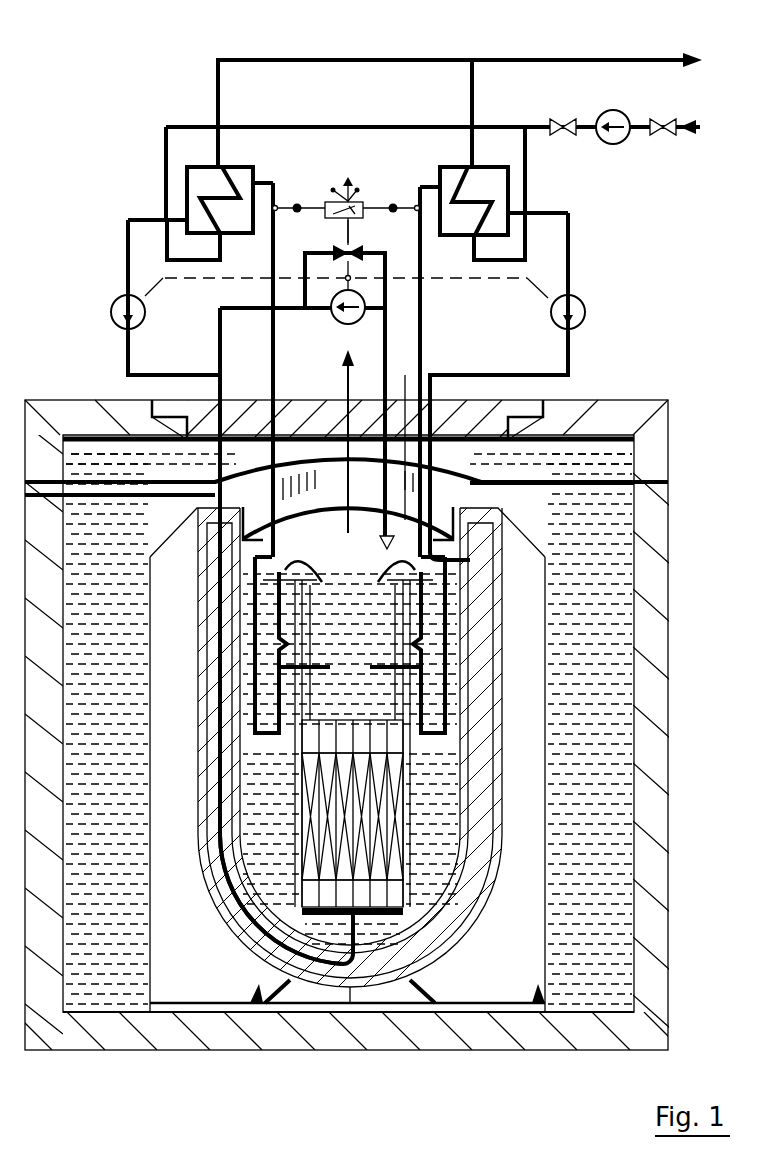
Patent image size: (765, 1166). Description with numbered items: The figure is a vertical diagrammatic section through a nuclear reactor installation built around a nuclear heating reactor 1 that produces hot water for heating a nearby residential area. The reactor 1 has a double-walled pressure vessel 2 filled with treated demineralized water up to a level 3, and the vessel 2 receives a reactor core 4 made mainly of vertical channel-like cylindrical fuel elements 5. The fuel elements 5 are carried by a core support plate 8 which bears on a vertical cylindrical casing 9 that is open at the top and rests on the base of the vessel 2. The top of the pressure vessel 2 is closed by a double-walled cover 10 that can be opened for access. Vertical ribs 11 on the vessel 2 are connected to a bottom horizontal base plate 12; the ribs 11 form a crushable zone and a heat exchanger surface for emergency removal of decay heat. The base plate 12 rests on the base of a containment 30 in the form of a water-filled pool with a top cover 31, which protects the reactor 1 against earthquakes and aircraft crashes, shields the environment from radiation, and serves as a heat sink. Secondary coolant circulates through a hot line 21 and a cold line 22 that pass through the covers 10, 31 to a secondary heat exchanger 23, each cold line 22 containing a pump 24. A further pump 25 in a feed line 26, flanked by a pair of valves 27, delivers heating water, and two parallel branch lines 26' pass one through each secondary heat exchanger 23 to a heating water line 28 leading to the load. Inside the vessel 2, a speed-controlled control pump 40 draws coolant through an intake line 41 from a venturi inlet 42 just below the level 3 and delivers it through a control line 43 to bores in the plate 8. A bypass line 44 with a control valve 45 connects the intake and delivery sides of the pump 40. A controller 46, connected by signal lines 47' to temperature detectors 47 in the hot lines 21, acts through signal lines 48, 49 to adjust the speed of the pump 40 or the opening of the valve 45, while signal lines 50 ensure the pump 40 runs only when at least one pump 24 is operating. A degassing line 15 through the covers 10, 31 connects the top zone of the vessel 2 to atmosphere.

The nuclear heating reactor 1 is at (557, 545).
The double-walled pressure vessel 2 is at (460, 600).
The level 3 is at (390, 540).
The reactor core 4 is at (390, 863).
The fuel elements 5 is at (320, 830).
The core support plate 8 is at (382, 916).
The vertical cylindrical casing 9 is at (405, 820).
The double-walled cover 10 is at (523, 468).
The vertical ribs 11 is at (350, 990).
The base plate 12 is at (400, 1007).
The degassing line 15 is at (342, 362).
The hot line 21 is at (270, 292).
The cold line 22 is at (128, 360).
The secondary heat exchanger 23 is at (195, 183).
The pump 24 is at (110, 312).
The pump 25 is at (613, 108).
The feed line 26 is at (433, 69).
The branch lines 26' is at (337, 112).
The valves 27 is at (563, 118).
The heating water line 28 is at (313, 60).
The containment 30 is at (652, 742).
The top cover 31 is at (468, 405).
The control pump 40 is at (335, 320).
The intake line 41 is at (388, 346).
The venturi inlet 42 is at (405, 390).
The control line 43 is at (220, 340).
The bypass line 44 is at (380, 276).
The control valve 45 is at (356, 249).
The controller 46 is at (348, 180).
The temperature detectors 47 is at (347, 175).
The signal lines 47' is at (351, 169).
The signal line 48 is at (325, 272).
The signal line 49 is at (345, 228).
The signal lines 50 is at (163, 278).